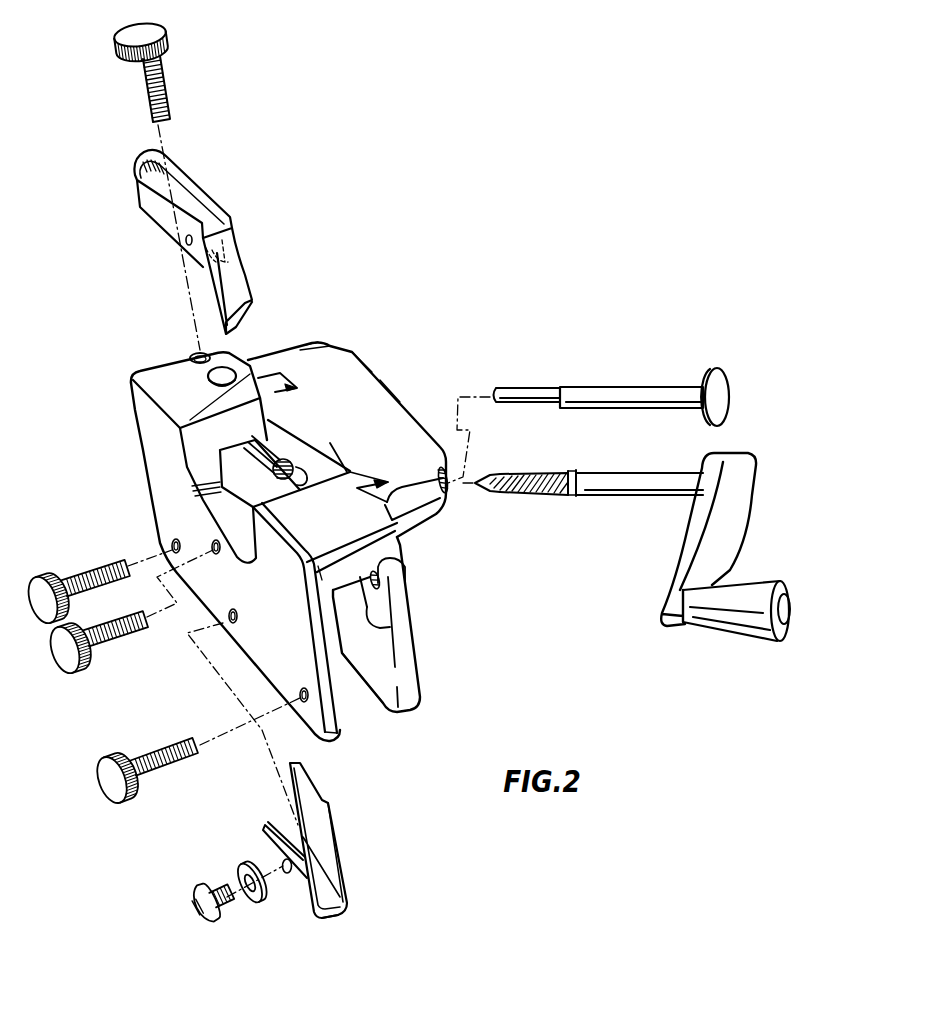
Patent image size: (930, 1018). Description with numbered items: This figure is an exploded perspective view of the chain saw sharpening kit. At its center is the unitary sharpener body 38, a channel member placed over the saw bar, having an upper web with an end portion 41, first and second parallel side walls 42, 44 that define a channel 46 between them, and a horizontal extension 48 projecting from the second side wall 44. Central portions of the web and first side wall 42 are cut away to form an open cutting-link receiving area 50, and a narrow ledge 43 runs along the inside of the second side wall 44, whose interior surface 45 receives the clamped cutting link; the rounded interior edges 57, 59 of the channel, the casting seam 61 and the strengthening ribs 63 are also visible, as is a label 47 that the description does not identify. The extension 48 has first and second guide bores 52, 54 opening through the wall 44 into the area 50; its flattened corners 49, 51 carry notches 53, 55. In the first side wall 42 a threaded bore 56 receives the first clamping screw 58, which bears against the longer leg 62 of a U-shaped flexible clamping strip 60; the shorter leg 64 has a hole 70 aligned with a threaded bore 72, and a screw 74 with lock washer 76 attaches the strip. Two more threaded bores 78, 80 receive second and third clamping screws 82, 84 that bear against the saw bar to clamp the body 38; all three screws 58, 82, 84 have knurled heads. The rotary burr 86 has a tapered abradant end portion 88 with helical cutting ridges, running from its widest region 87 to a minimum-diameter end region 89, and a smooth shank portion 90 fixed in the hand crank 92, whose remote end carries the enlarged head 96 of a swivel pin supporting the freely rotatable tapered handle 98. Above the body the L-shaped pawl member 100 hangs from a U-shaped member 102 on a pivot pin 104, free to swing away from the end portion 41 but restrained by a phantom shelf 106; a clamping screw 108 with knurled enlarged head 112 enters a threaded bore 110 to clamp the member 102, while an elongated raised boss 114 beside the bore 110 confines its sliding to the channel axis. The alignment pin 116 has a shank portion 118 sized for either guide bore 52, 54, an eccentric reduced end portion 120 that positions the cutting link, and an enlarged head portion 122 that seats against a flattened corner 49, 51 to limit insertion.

The sharpener body 38 is at (126, 414).
The end portion of upper web 41 is at (157, 370).
The first side wall 42 is at (343, 731).
The narrow ledge 43 is at (367, 585).
The second side wall 44 is at (413, 707).
The interior surface of second side wall 45 is at (400, 623).
The channel 46 is at (372, 661).
The side wall of body 47 is at (397, 395).
The horizontal extension 48 is at (362, 366).
The flattened corner 49 is at (434, 479).
The open viewing area 50 is at (220, 474).
The flattened corner 51 is at (316, 343).
The first horizontal guide bore 52 is at (303, 474).
The notch 53 is at (437, 468).
The second horizontal guide bore 54 is at (292, 470).
The notch 55 is at (329, 353).
The threaded bore 56 is at (220, 553).
The rounded interior edge of channel 57 is at (322, 563).
The first clamping screw 58 is at (107, 647).
The rounded interior edge of channel 59 is at (400, 568).
The flexible clamping strip 60 is at (337, 914).
The seam 61 is at (427, 533).
The longer leg of clamping strip 62 is at (337, 836).
The strengthening ribs 63 is at (281, 383).
The shorter leg of clamping strip 64 is at (303, 893).
The hole 70 is at (280, 860).
The threaded bore 72 is at (238, 613).
The screw 74 is at (188, 894).
The lock washer 76 is at (240, 869).
The threaded bore 78 is at (303, 689).
The threaded bore 80 is at (173, 540).
The second clamping screw 82 is at (157, 753).
The third clamping screw 84 is at (83, 577).
The rotary burr 86 is at (578, 510).
The maximum-diameter portion 87 is at (538, 477).
The abradant end portion 88 is at (516, 497).
The end region of minimum diameter 89 is at (478, 480).
The smooth shank portion 90 is at (618, 497).
The hand crank 92 is at (682, 548).
The enlarged head of swivel pin 96 is at (793, 617).
The swivel-type handle 98 is at (715, 622).
The pawl member 100 is at (246, 277).
The U-shaped member 102 is at (200, 187).
The pivot pin 104 is at (184, 240).
The cross-member or shelf 106 is at (223, 257).
The clamping screw 108 is at (166, 103).
The threaded bore 110 is at (194, 348).
The enlarged head of clamping screw 112 is at (166, 43).
The raised boss 114 is at (228, 370).
The alignment pin 116 is at (581, 381).
The shank portion of alignment pin 118 is at (618, 392).
The reduced end portion of alignment pin 120 is at (510, 387).
The enlarged head portion of alignment pin 122 is at (718, 378).